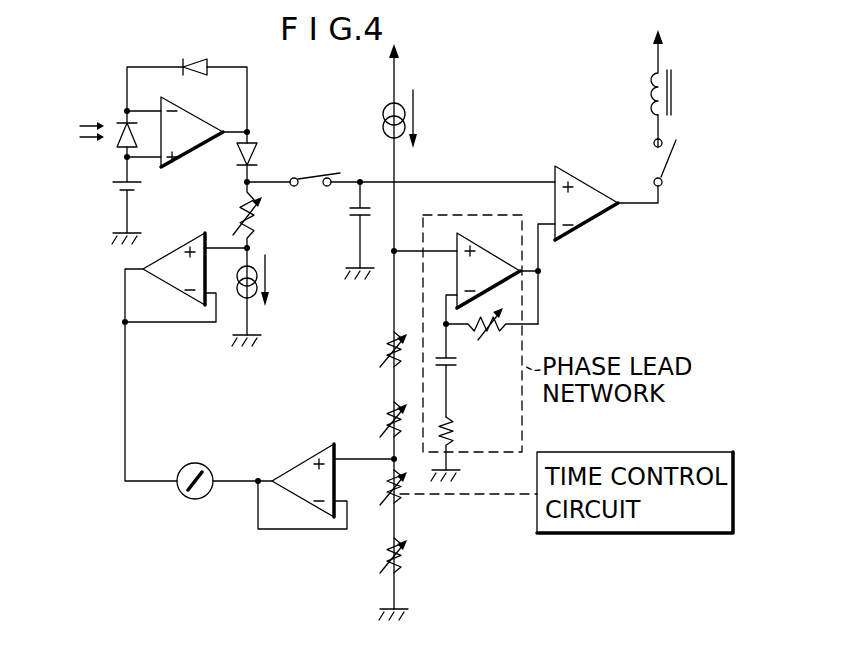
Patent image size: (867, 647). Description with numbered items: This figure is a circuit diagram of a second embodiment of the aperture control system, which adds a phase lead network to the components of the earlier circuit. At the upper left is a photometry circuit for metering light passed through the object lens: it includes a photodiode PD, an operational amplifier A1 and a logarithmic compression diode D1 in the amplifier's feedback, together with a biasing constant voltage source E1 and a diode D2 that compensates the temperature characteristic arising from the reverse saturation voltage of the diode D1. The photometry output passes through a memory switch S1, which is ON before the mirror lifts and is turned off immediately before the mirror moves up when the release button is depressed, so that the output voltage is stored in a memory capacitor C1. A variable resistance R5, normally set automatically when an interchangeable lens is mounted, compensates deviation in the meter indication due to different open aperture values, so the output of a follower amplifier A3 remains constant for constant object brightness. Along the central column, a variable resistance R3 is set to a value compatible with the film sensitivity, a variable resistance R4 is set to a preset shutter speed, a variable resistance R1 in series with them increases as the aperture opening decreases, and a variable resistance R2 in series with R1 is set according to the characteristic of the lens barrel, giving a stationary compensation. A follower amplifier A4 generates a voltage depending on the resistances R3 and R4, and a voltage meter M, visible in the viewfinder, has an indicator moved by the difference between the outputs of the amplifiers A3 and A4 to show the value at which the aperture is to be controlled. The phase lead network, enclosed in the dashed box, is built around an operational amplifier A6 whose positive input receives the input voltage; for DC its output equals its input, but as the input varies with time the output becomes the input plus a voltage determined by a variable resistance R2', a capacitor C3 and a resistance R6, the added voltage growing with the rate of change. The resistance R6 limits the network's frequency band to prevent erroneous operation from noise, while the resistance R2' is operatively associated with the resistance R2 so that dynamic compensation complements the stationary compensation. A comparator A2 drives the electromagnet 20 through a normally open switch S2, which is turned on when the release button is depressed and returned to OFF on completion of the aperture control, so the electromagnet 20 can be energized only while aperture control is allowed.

The logarithmic compression diode D1 is at (195, 58).
The operational amplifier A1 is at (190, 157).
The photodiode PD is at (118, 148).
The biasing constant voltage source E1 is at (118, 186).
The diode D2 is at (258, 158).
The variable resistance R5 is at (242, 214).
The follower amplifier A3 is at (172, 250).
The memory switch S1 is at (313, 178).
The memory capacitor C1 is at (350, 212).
The operational amplifier A6 is at (494, 250).
The variable resistance R2' is at (490, 343).
The capacitor C3 is at (447, 371).
The resistance R6 is at (452, 428).
The variable resistance R2 is at (375, 349).
The variable resistance R1 is at (386, 422).
The variable resistance R4 is at (398, 498).
The variable resistance R3 is at (398, 557).
The follower amplifier A4 is at (294, 463).
The voltage meter M is at (190, 499).
The comparator A2 is at (588, 178).
The switch S2 is at (669, 158).
The electromagnet 20 is at (673, 92).